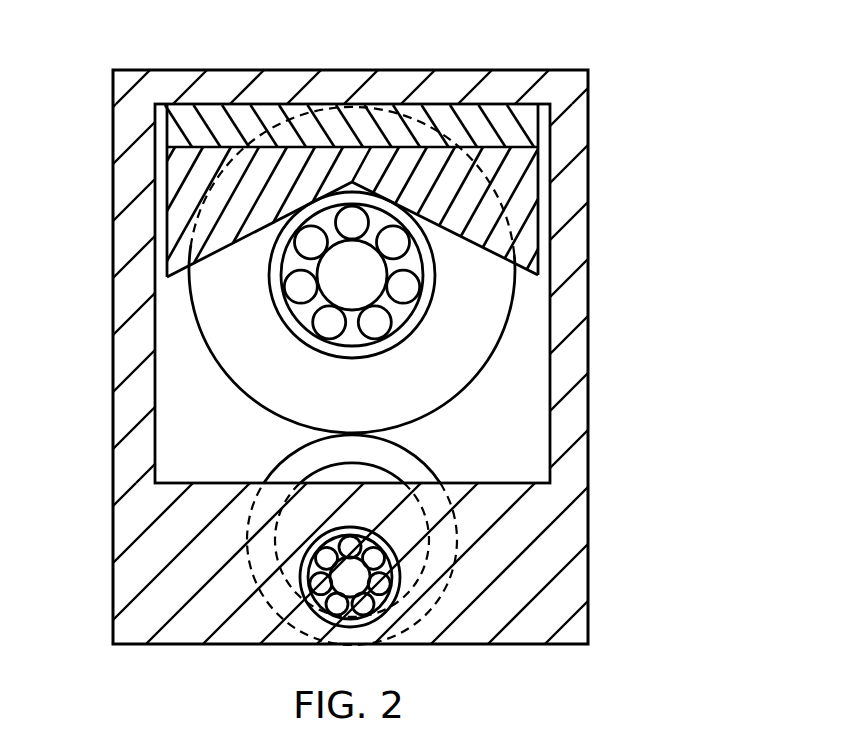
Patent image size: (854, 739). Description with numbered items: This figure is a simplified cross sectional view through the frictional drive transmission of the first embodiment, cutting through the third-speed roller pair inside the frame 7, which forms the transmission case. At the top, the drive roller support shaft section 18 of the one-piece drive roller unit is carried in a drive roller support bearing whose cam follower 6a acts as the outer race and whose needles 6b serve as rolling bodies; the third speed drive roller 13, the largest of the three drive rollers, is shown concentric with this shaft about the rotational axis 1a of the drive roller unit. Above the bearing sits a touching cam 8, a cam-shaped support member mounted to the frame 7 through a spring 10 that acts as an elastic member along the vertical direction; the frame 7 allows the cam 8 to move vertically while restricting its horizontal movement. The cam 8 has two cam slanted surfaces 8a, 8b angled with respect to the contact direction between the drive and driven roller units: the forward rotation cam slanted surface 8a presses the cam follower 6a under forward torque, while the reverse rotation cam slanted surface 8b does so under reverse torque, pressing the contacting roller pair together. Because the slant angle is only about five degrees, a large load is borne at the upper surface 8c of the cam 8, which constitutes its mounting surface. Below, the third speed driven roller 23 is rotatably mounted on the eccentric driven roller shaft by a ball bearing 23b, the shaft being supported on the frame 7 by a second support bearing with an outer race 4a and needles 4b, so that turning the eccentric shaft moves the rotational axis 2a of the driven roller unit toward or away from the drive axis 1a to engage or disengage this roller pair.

The rotational axis of the drive roller unit 1a is at (350, 275).
The rotational axis of the driven roller unit 2a is at (352, 577).
The outer race 4a is at (385, 613).
The needles 4b is at (306, 582).
The cam follower 6a is at (423, 322).
The needles 6b is at (330, 322).
The frame 7 is at (567, 132).
The touching cam 8 is at (527, 188).
The forward rotation cam slanted surface 8a is at (507, 298).
The reverse rotation cam slanted surface 8b is at (187, 250).
The upper surface of the cam 8c is at (477, 147).
The spring 10 is at (155, 122).
The third speed drive roller 13 is at (277, 417).
The drive roller support shaft section 18 is at (330, 268).
The third speed driven roller 23 is at (443, 488).
The ball bearing 23b is at (360, 472).